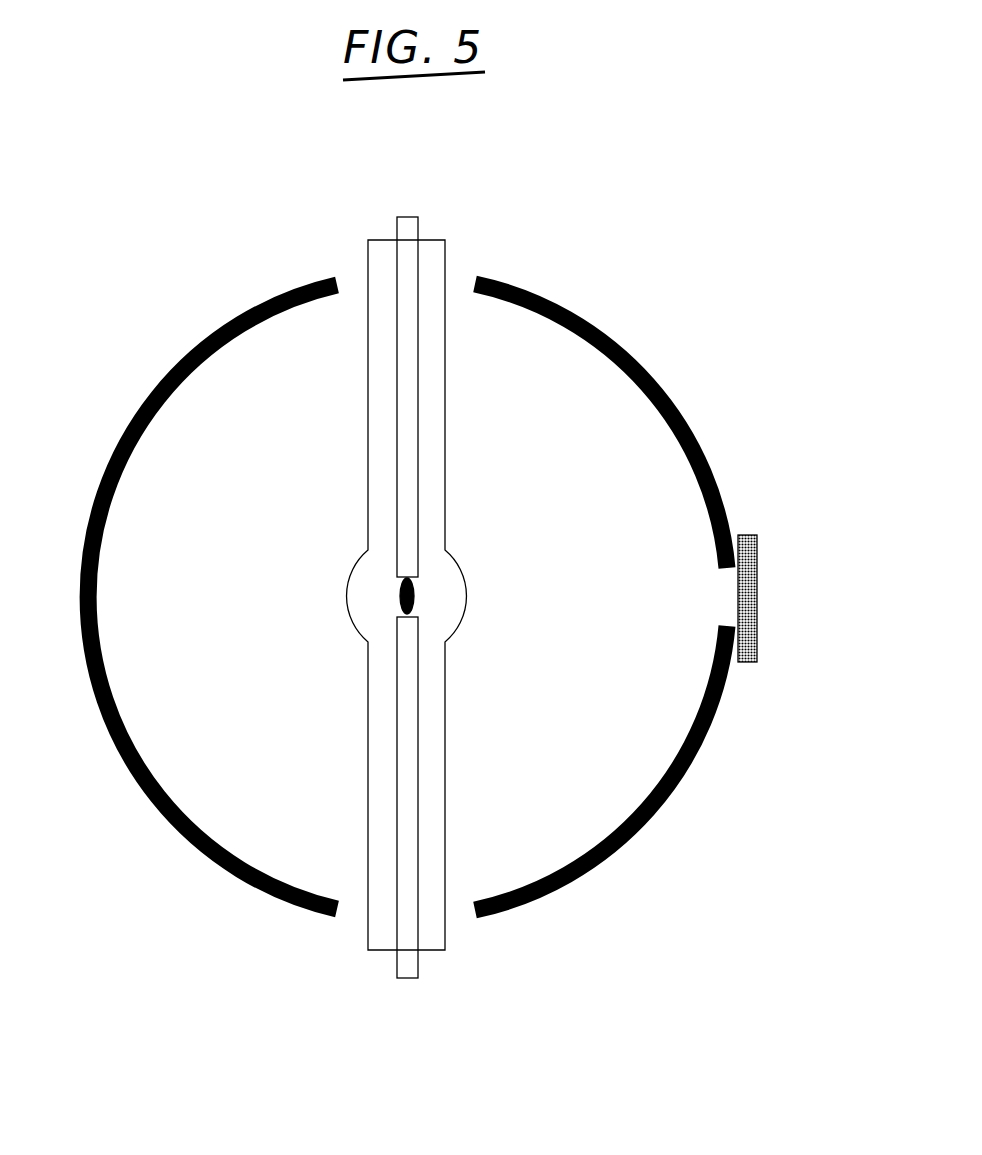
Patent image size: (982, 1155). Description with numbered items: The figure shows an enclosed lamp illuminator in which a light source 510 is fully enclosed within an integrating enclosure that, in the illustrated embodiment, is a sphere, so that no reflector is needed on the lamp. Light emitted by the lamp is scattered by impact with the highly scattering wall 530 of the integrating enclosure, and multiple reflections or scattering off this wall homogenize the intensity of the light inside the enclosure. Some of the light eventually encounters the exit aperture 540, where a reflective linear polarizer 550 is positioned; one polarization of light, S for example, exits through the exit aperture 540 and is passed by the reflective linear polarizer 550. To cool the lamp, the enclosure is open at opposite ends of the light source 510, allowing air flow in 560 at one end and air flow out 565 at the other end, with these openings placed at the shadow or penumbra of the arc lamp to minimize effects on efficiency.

The light source 510 is at (367, 268).
The highly scattering wall 530 is at (583, 310).
The exit aperture 540 is at (728, 582).
The reflective linear polarizer 550 is at (758, 662).
The air flow in 560 is at (455, 288).
The air flow out 565 is at (453, 913).